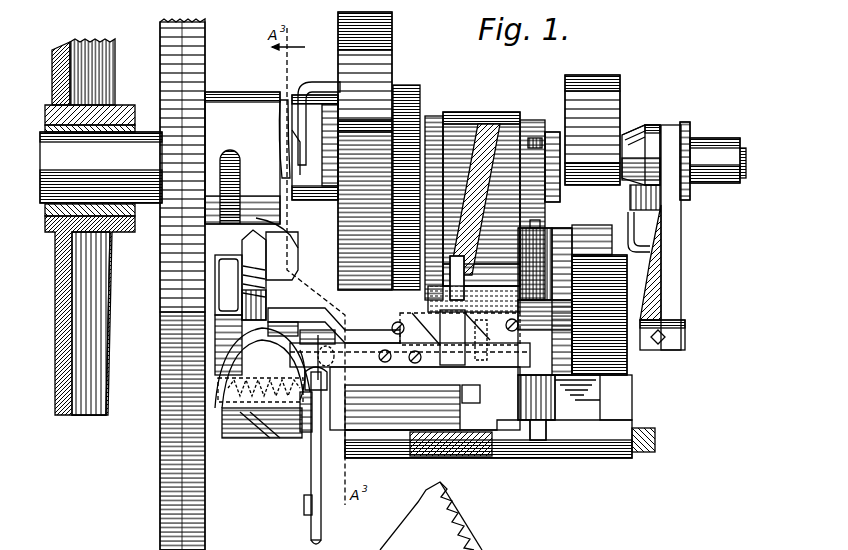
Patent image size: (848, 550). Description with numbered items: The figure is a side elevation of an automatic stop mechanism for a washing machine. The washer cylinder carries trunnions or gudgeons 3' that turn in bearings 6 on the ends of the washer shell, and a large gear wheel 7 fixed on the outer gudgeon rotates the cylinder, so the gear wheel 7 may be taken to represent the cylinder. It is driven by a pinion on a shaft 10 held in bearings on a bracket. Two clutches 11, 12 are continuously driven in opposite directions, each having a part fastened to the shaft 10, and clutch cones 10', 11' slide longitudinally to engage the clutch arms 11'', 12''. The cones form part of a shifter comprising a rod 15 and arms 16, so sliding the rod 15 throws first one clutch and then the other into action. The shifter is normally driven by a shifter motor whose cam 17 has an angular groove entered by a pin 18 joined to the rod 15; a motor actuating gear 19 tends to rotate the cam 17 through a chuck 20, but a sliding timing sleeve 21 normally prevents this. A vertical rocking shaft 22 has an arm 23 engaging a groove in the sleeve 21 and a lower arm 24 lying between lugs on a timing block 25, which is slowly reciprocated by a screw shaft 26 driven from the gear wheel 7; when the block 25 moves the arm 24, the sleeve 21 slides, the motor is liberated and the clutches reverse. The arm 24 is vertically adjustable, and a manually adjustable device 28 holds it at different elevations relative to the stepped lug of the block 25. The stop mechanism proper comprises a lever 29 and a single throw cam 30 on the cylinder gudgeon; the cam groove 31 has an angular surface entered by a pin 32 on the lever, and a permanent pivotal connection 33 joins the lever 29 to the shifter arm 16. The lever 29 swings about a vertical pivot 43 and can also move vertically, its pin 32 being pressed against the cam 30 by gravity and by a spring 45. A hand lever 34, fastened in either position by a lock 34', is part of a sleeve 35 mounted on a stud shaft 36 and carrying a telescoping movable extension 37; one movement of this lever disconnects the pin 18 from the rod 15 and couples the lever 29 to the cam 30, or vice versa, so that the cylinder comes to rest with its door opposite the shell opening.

The trunnions or gudgeons 3' is at (101, 167).
The bearings 6 is at (110, 102).
The large gear wheel 7 is at (175, 340).
The shaft 10 is at (729, 161).
The clutch cone 10' is at (645, 145).
The clutch 11 is at (315, 155).
The clutch cone 11' is at (272, 122).
The clutch arm 11'' is at (316, 128).
The clutch 12 is at (638, 143).
The clutch arm 12'' is at (669, 232).
The shifter rod 15 is at (382, 74).
The shifter arms 16 is at (676, 255).
The cam of the shifter motor 17 is at (463, 124).
The pin 18 is at (470, 407).
The motor actuating gear 19 is at (405, 97).
The chuck 20 is at (436, 117).
The timing sleeve 21 is at (528, 127).
The vertical rocking shaft 22 is at (546, 175).
The arm 23 is at (546, 135).
The arm 24 is at (531, 422).
The timing block 25 is at (612, 440).
The screw shaft 26 is at (468, 442).
The manually adjustable device 28 is at (555, 268).
The lever 29 is at (300, 252).
The single throw cam 30 is at (242, 158).
The cam groove 31 is at (205, 230).
The pin 32 is at (289, 248).
The pivotal connection 33 is at (280, 318).
The hand lever 34 is at (327, 458).
The lock 34' is at (294, 514).
The sleeve 35 is at (340, 371).
The stud shaft 36 is at (580, 398).
The movable extension 37 is at (445, 362).
The vertical pivot 43 is at (240, 262).
The spring 45 is at (244, 284).